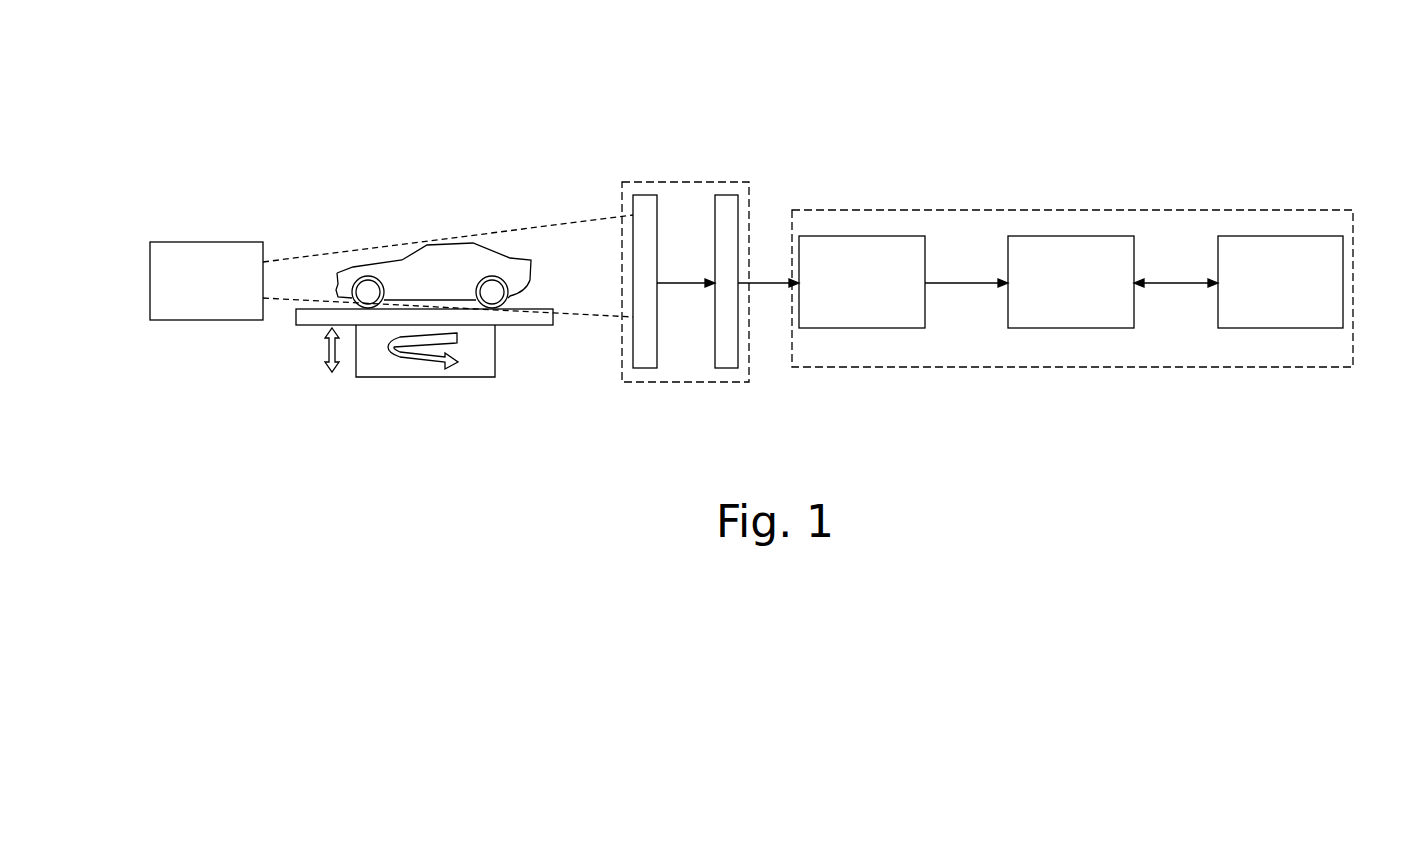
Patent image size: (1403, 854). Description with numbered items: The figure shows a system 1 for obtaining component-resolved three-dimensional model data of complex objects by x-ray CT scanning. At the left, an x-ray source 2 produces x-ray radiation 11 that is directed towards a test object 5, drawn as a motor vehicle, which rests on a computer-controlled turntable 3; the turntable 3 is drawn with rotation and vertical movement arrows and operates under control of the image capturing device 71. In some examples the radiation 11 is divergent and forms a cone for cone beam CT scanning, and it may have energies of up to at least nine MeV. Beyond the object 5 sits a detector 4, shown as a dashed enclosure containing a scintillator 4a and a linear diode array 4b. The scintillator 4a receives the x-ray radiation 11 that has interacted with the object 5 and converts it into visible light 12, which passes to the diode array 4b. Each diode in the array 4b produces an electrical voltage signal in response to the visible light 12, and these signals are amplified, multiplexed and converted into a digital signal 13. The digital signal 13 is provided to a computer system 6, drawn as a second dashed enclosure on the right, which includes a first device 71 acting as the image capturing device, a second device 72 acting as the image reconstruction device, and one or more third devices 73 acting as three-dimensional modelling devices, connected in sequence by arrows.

The system 1 is at (372, 90).
The x-ray source 2 is at (208, 248).
The computer-controlled turntable 3 is at (482, 347).
The detector 4 is at (699, 300).
The scintillator 4a is at (642, 357).
The linear diode array 4b is at (728, 357).
The test object 5 is at (530, 261).
The computer system 6 is at (1072, 285).
The first device (image capturing device) 71 is at (848, 318).
The second device (image reconstruction device) 72 is at (1047, 318).
The third device (3D modelling device) 73 is at (1267, 318).
The x-ray radiation 11 is at (320, 262).
The visible light 12 is at (677, 278).
The digital signal 13 is at (765, 278).